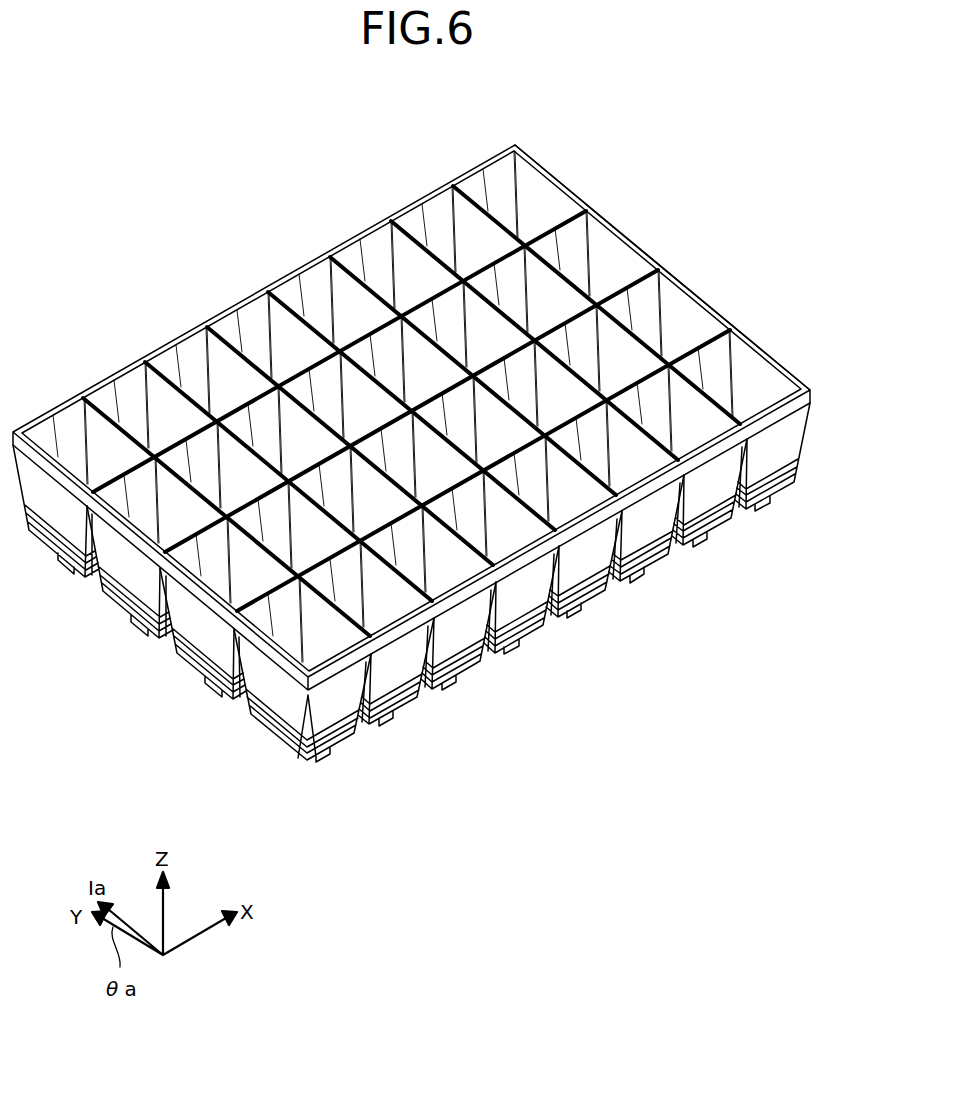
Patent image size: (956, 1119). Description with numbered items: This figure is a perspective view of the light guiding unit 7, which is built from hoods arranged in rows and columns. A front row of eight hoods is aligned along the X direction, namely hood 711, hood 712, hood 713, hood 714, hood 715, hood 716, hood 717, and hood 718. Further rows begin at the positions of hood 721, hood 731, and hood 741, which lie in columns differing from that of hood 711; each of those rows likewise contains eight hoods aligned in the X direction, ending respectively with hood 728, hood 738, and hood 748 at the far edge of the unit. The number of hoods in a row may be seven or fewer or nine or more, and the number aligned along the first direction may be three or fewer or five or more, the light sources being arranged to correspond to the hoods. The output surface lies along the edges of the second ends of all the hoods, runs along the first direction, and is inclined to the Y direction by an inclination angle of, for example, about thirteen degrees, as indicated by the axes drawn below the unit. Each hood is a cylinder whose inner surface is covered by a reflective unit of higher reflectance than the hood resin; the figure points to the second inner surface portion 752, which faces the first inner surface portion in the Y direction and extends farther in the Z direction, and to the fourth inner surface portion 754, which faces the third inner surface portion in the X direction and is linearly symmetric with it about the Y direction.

The light guiding unit 7 is at (318, 139).
The hood 711 is at (280, 720).
The hood 712 is at (388, 687).
The hood 713 is at (450, 657).
The hood 714 is at (511, 618).
The hood 715 is at (573, 584).
The hood 716 is at (637, 549).
The hood 717 is at (699, 518).
The hood 718 is at (762, 483).
The hood 721 is at (207, 663).
The hood 731 is at (130, 595).
The hood 741 is at (60, 540).
The hood 728 is at (702, 292).
The hood 738 is at (622, 223).
The hood 748 is at (543, 162).
The second inner surface portion 752 is at (184, 336).
The fourth inner surface portion 754 is at (227, 377).